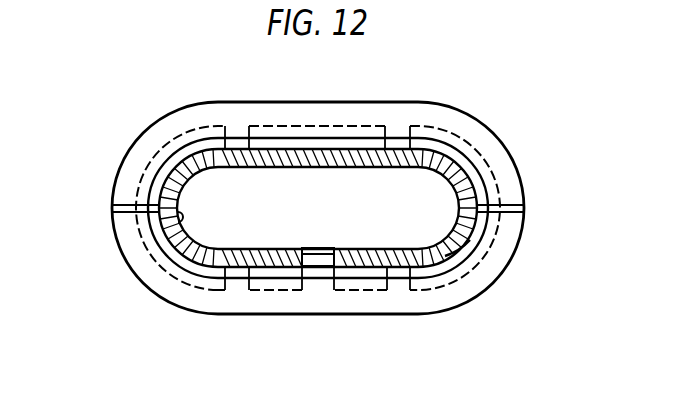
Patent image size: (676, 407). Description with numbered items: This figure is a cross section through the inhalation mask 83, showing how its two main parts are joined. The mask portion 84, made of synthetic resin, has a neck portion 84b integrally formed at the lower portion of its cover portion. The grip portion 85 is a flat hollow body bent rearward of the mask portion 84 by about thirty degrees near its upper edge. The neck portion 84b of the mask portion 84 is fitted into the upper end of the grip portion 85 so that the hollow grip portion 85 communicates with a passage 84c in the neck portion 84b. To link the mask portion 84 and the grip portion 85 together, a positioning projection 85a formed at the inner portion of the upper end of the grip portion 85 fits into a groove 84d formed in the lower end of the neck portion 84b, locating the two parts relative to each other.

The inhalation mask 83 is at (333, 78).
The mask portion 84 is at (462, 151).
The neck portion 84b is at (466, 261).
The passage 84c is at (183, 218).
The groove 84d is at (318, 249).
The grip portion 85 is at (110, 162).
The positioning projection 85a is at (323, 270).